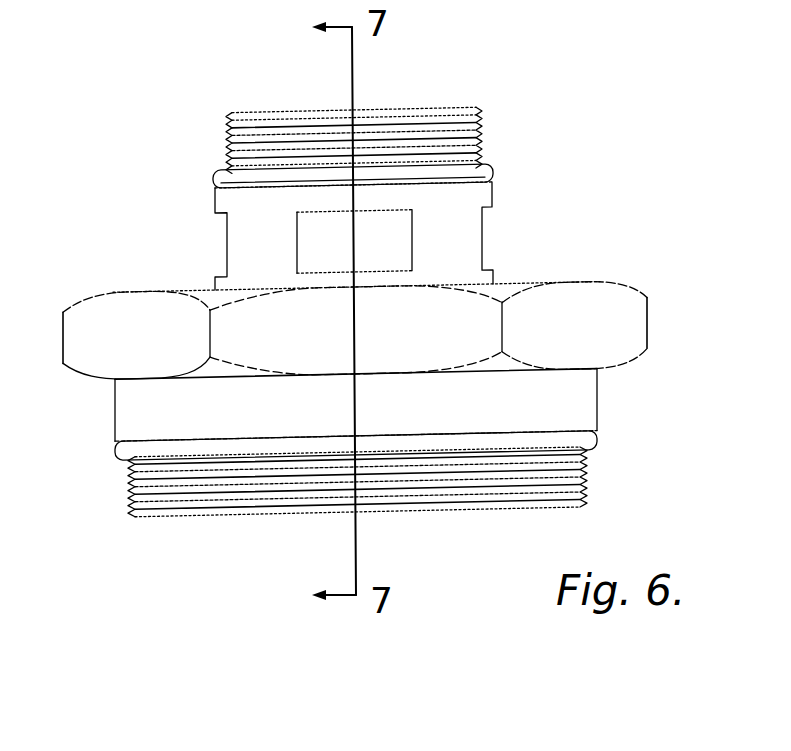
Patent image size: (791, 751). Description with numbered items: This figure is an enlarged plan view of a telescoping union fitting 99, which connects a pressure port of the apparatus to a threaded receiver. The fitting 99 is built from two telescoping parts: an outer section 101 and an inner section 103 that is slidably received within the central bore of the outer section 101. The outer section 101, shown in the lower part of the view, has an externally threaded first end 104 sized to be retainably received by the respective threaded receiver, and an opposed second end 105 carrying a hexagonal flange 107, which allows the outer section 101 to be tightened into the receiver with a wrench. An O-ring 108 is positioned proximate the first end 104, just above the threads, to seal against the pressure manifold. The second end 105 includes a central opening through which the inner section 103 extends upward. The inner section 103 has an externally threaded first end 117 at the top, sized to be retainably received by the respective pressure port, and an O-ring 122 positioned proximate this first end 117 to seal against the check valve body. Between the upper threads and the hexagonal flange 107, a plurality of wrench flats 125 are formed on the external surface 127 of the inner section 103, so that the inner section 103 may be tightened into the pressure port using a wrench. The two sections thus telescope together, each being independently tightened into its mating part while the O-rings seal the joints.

The telescoping union fitting 99 is at (578, 37).
The externally threaded first end 117 is at (478, 126).
The O-ring 122 is at (488, 166).
The inner section 103 is at (493, 186).
The wrench flats 125 is at (438, 236).
The external surface 127 is at (252, 237).
The second end 105 is at (540, 284).
The hexagonal flange 107 is at (650, 301).
The outer section 101 is at (599, 396).
The O-ring 108 is at (597, 446).
The externally threaded first end 104 is at (582, 520).